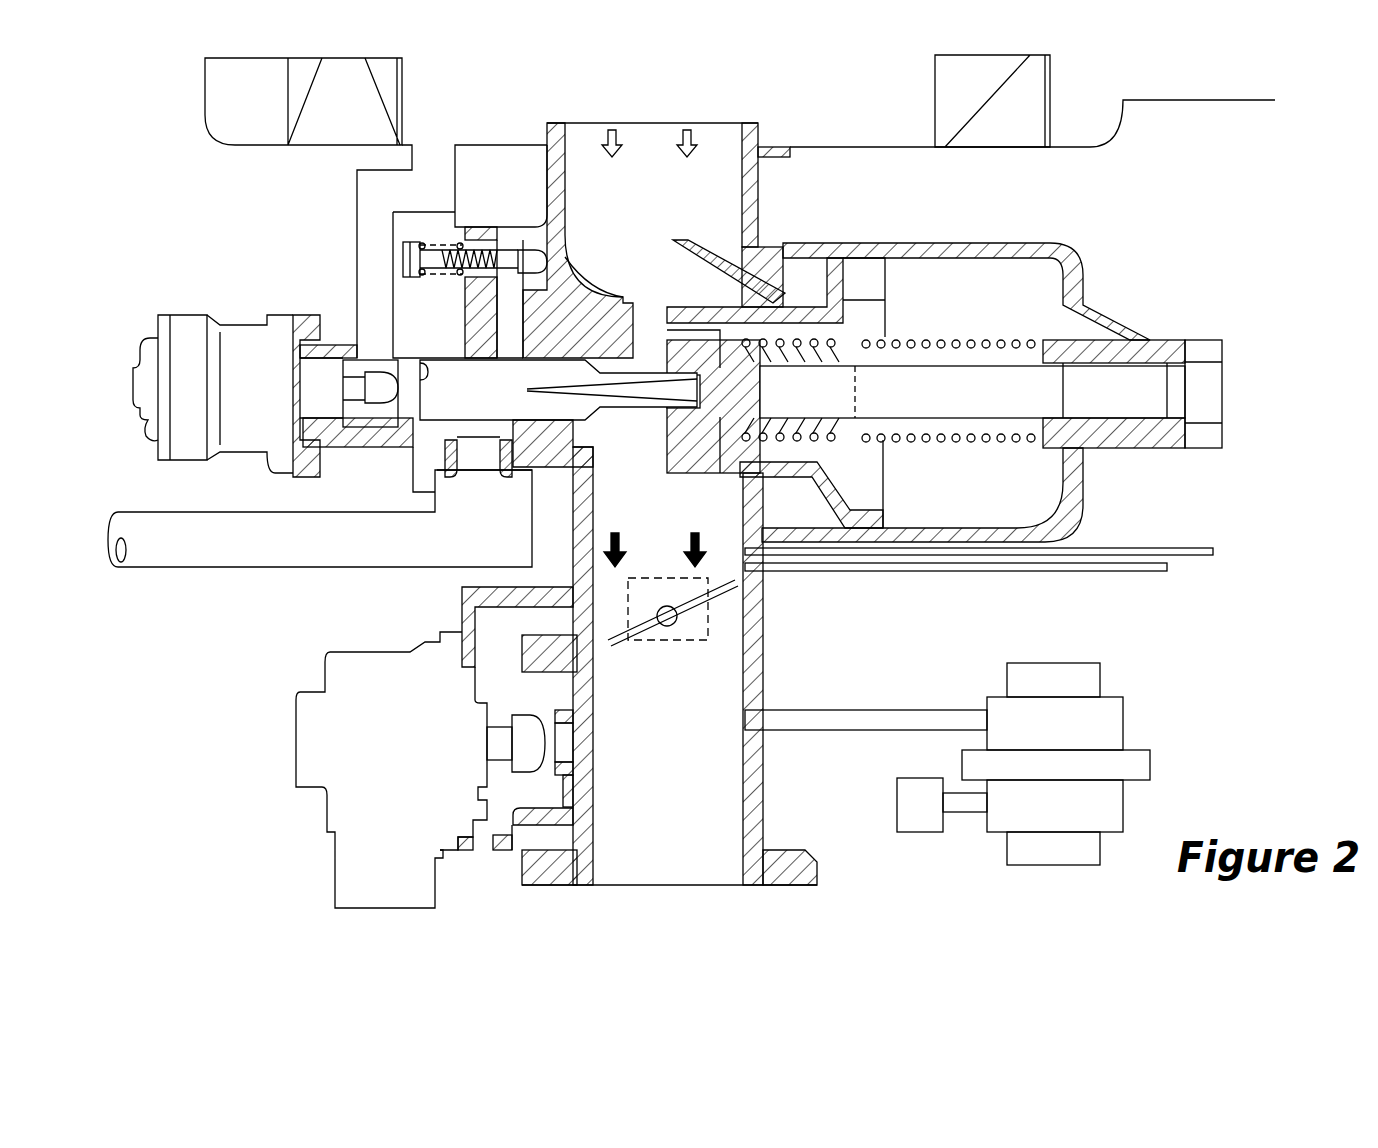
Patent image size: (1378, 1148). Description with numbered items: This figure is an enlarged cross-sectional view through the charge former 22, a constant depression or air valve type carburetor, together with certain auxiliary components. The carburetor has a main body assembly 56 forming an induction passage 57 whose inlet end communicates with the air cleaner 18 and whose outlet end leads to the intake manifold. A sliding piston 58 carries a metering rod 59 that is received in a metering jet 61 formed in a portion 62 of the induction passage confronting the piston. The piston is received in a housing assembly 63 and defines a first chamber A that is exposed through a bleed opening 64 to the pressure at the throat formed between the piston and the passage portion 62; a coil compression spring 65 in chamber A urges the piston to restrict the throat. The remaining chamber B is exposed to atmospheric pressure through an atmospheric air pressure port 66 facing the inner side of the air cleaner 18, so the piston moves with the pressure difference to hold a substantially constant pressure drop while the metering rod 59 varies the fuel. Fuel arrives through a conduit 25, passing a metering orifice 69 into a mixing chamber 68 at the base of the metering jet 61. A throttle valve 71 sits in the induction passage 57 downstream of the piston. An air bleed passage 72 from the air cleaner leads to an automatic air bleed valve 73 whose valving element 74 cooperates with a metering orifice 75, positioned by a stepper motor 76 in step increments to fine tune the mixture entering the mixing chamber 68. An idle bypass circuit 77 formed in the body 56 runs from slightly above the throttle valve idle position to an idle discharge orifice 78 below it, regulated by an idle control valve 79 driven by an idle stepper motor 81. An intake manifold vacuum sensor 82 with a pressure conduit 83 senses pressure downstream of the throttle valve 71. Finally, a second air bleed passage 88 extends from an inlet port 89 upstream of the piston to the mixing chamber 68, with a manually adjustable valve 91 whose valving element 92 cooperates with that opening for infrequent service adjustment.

The air cleaner 18 is at (900, 152).
The charge former 22 is at (1235, 270).
The conduit 25 is at (262, 570).
The main body assembly 56 is at (770, 650).
The induction passage 57 is at (740, 802).
The sliding piston 58 is at (890, 300).
The metering rod 59 is at (647, 370).
The metering jet 61 is at (622, 410).
The induction passage portion 62 is at (628, 420).
The housing assembly 63 is at (1098, 292).
The bleed opening 64 is at (660, 330).
The coil compression spring 65 is at (975, 335).
The atmospheric air pressure port 66 is at (705, 240).
The mixing chamber 68 is at (455, 388).
The metering orifice 69 is at (460, 448).
The throttle valve 71 is at (695, 630).
The air bleed passage 72 is at (353, 187).
The automatic air bleed valve 73 is at (262, 298).
The valving element 74 is at (375, 398).
The metering orifice 75 is at (390, 342).
The stepper motor 76 is at (150, 338).
The idle bypass circuit 77 is at (483, 630).
The idle discharge orifice 78 is at (572, 763).
The idle control valve 79 is at (530, 775).
The idle stepper motor 81 is at (297, 750).
The intake manifold vacuum sensor 82 is at (1035, 663).
The pressure conduit 83 is at (820, 707).
The air bleed passage 88 is at (400, 300).
The inlet port 89 is at (567, 257).
The manually adjustable valve 91 is at (412, 240).
The valving element 92 is at (530, 250).
The first chamber A is at (995, 270).
The remaining chamber B is at (790, 270).